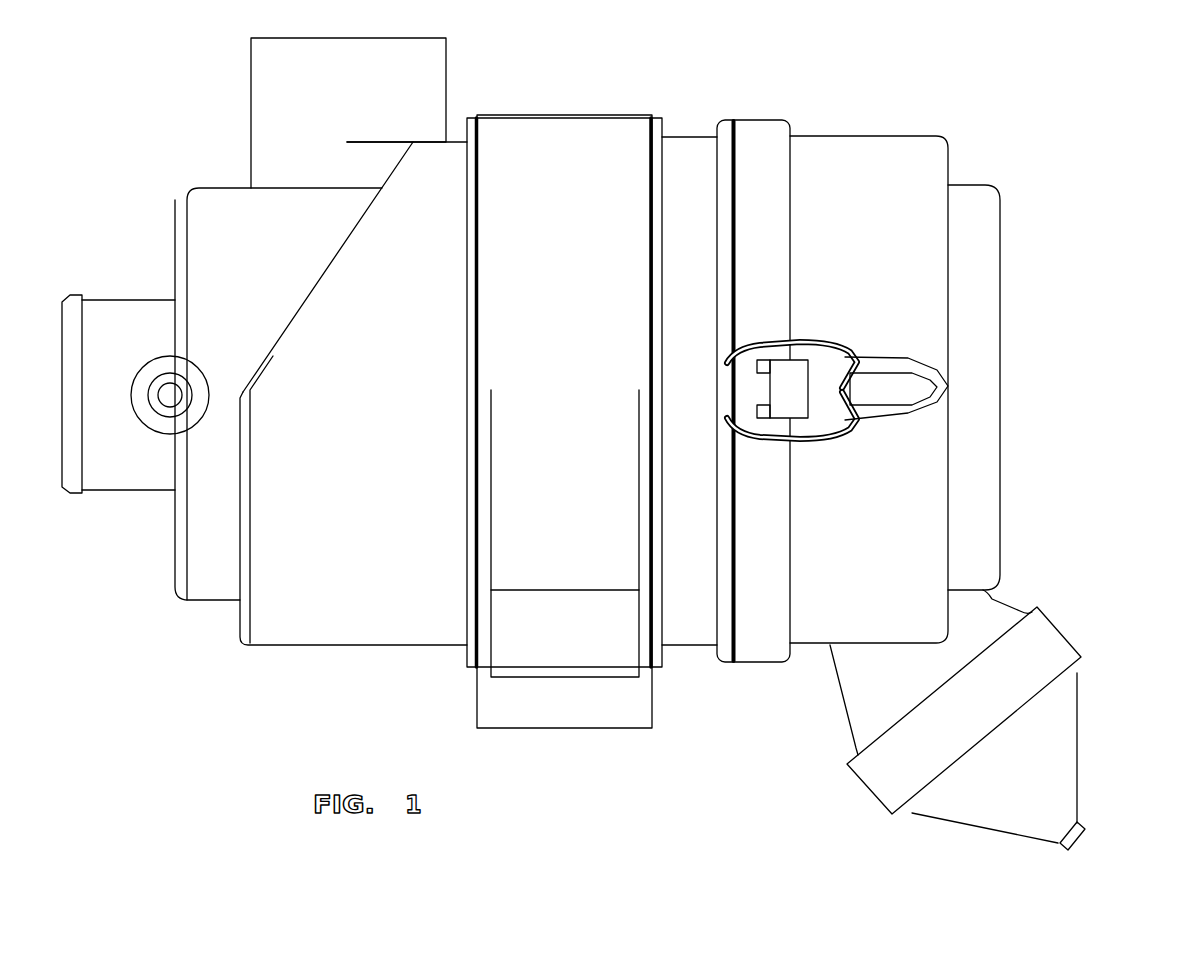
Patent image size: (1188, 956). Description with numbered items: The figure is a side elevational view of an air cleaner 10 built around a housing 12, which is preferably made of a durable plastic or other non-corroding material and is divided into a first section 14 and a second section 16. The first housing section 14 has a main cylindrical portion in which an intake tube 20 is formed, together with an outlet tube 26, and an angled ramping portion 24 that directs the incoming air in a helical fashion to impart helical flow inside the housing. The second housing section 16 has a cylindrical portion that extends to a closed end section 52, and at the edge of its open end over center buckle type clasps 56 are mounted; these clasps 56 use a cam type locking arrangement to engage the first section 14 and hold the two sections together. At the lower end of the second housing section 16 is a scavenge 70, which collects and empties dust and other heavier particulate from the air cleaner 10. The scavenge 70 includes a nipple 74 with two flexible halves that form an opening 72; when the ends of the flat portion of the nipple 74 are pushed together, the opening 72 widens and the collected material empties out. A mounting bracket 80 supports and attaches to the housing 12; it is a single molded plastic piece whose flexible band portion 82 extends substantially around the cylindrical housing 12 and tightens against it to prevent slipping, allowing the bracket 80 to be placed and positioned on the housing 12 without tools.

The air cleaner 10 is at (983, 104).
The housing 12 is at (695, 130).
The first housing section 14 is at (313, 647).
The second housing section 16 is at (878, 133).
The intake tube 20 is at (270, 98).
The angled ramping portion 24 is at (328, 270).
The outlet tube 26 is at (113, 310).
The closed end section 52 is at (1002, 360).
The over center buckle type clasp 56 is at (830, 338).
The scavenge 70 is at (1002, 598).
The opening 72 is at (1083, 842).
The nipple 74 is at (1067, 740).
The mounting bracket 80 is at (618, 96).
The flexible band portion 82 is at (530, 130).